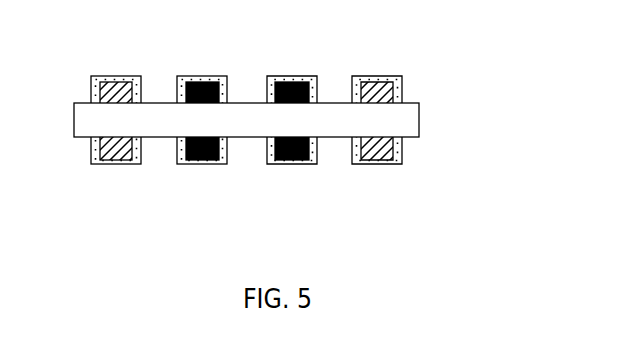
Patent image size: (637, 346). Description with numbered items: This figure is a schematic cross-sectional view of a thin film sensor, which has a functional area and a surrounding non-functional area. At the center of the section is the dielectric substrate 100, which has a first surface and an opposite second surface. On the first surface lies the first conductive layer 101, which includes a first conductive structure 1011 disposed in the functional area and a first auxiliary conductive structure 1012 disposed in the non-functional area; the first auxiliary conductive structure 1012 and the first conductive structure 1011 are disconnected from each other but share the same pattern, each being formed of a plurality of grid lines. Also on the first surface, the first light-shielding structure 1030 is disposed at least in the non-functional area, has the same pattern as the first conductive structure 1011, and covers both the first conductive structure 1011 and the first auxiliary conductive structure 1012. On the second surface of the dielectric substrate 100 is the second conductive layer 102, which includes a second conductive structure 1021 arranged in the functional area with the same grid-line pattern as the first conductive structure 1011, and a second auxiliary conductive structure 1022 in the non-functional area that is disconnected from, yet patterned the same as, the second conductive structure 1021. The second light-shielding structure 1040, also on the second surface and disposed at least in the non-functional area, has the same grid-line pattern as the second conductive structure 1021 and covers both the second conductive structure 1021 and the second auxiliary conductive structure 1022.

The dielectric substrate 100 is at (419, 119).
The first conductive layer 101 is at (358, 84).
The first conductive structure 1011 is at (293, 81).
The first auxiliary conductive structure 1012 is at (375, 80).
The second conductive layer 102 is at (358, 168).
The second conductive structure 1021 is at (309, 149).
The second auxiliary conductive structure 1022 is at (376, 162).
The first light-shielding structure 1030 is at (403, 86).
The second light-shielding structure 1040 is at (403, 153).